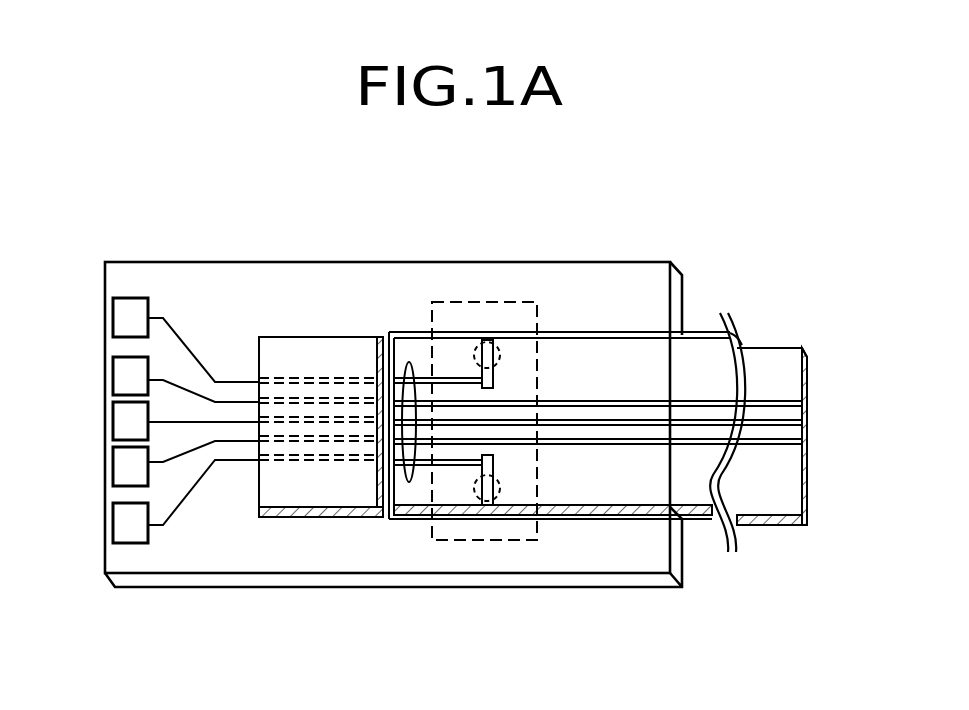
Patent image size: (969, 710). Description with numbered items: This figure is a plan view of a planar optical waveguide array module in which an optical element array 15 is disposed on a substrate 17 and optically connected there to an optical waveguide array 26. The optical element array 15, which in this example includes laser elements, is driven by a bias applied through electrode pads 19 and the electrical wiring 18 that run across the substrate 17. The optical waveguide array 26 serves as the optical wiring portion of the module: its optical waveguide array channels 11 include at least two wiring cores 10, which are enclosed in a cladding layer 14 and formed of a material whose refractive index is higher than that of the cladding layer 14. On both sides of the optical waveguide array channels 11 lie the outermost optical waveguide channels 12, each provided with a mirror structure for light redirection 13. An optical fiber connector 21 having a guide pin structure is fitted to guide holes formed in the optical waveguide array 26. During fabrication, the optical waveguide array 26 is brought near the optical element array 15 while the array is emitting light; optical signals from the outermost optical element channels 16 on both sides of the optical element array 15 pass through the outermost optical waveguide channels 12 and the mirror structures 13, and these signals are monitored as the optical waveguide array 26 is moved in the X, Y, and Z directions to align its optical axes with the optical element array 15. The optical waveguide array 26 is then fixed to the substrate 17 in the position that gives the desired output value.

The wiring core 10 is at (617, 445).
The optical waveguide array channels 11 is at (397, 512).
The outermost optical waveguide channel 12 is at (453, 380).
The mirror structure for light redirection 13 is at (500, 368).
The cladding layer 14 is at (697, 480).
The optical element array 15 is at (280, 490).
The outermost optical element channel 16 is at (335, 380).
The substrate 17 is at (265, 323).
The electrical wiring 18 is at (183, 337).
The electrode pad 19 is at (130, 312).
The optical fiber connector 21 is at (480, 302).
The optical waveguide array 26 is at (698, 335).